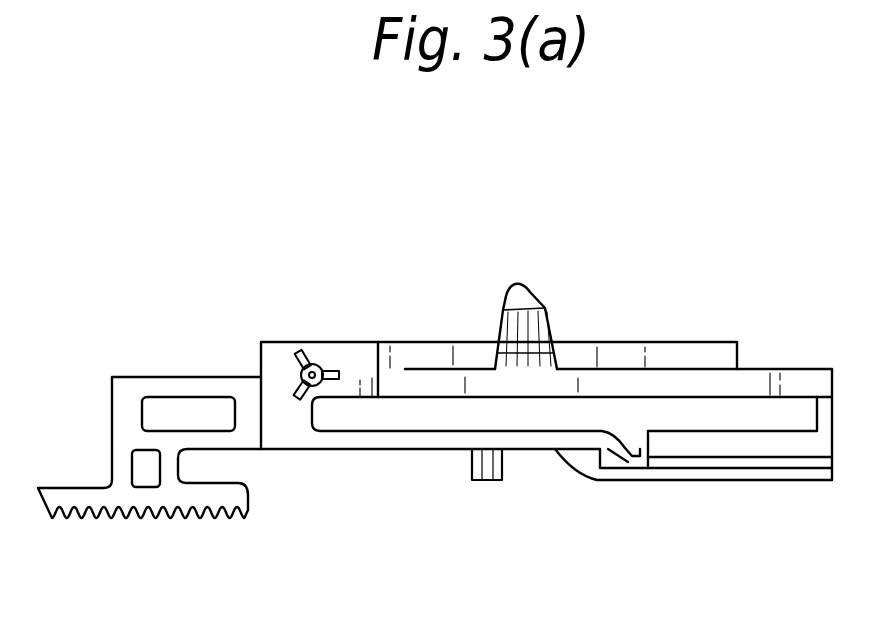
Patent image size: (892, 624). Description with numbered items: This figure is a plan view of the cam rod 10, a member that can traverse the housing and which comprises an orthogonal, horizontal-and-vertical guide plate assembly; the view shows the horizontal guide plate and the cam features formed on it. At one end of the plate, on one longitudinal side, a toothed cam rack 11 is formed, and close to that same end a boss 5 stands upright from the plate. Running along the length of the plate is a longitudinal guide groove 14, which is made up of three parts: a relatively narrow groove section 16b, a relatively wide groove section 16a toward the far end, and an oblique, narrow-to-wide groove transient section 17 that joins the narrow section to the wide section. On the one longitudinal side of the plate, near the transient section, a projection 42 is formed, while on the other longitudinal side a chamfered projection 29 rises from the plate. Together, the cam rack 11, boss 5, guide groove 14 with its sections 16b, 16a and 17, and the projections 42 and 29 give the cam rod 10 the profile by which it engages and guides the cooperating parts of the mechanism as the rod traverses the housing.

The cam rod 10 is at (666, 322).
The boss 5 is at (325, 362).
The cam rack 11 is at (103, 498).
The longitudinal guide groove 14 is at (660, 410).
The relatively wide groove section 16a is at (781, 457).
The relatively narrow groove section 16b is at (432, 430).
The oblique narrow-to-wide groove transient section 17 is at (597, 477).
The chamfered projection 29 is at (528, 296).
The projection 42 is at (482, 480).